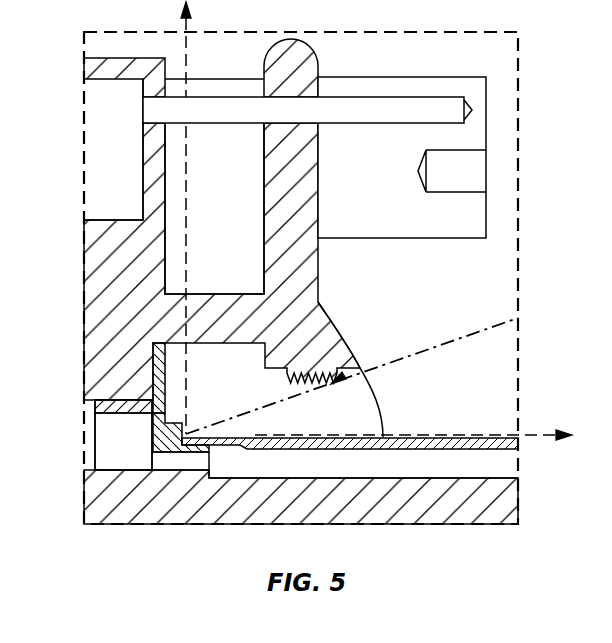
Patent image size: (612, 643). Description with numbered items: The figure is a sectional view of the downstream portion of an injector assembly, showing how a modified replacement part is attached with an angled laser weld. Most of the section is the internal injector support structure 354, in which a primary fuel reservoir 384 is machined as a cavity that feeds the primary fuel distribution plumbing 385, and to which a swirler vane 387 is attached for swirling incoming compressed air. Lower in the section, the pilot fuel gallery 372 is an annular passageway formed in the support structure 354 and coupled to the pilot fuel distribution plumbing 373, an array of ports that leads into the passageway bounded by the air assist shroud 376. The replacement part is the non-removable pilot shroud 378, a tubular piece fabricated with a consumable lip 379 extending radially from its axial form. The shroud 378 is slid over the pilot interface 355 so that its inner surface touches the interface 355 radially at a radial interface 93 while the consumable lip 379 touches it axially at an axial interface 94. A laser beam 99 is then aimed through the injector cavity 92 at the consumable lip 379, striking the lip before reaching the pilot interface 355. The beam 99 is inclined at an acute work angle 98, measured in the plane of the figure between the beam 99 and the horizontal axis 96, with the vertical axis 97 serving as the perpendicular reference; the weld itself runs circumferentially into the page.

The internal injector support structure 354 is at (93, 284).
The primary fuel reservoir 384 is at (93, 135).
The primary fuel distribution plumbing 385 is at (198, 107).
The swirler vane 387 is at (397, 228).
The vertical axis 97 is at (187, 175).
The work angle 98 is at (380, 395).
The laser beam 99 is at (442, 342).
The pilot interface 355 is at (155, 385).
The consumable lip 379 is at (183, 425).
The non-removable pilot shroud 378 is at (449, 445).
The horizontal axis 96 is at (543, 434).
The injector cavity 92 is at (349, 424).
The pilot fuel gallery 372 is at (103, 437).
The axial interface 94 is at (182, 422).
The radial interface 93 is at (189, 438).
The pilot fuel distribution plumbing 373 is at (208, 453).
The air assist shroud 376 is at (463, 515).